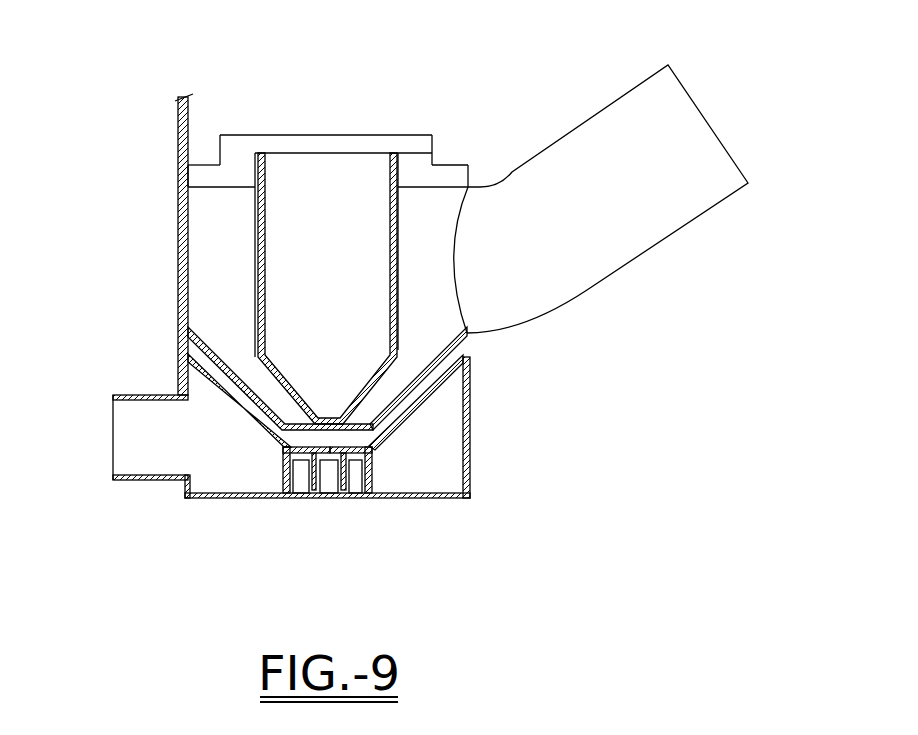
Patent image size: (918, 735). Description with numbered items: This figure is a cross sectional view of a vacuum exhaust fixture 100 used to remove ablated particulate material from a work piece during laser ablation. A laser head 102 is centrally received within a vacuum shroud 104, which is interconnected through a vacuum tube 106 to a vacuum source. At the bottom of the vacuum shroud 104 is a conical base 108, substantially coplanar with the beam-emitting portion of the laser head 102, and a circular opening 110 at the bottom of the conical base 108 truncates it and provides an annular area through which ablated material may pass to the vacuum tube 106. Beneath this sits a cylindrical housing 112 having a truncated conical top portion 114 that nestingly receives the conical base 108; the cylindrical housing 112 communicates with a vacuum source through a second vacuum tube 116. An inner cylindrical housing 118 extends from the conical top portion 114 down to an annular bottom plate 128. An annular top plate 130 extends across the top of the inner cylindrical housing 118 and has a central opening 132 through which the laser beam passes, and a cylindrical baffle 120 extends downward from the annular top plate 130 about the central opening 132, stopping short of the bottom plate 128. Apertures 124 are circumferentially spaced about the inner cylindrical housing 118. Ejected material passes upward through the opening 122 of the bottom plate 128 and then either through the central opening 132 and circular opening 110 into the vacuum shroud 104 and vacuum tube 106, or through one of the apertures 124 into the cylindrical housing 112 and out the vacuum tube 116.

The vacuum exhaust fixture 100 is at (290, 112).
The laser head 102 is at (350, 288).
The vacuum shroud 104 is at (441, 172).
The vacuum tube 106 is at (568, 133).
The conical base 108 is at (470, 335).
The circular opening 110 is at (283, 413).
The cylindrical housing 112 is at (482, 450).
The truncated conical top portion 114 is at (418, 403).
The vacuum tube 116 is at (148, 480).
The inner cylindrical housing 118 is at (376, 482).
The cylindrical baffle 120 is at (307, 473).
The opening 122 is at (340, 508).
The apertures 124 is at (321, 483).
The bottom plate 128 is at (204, 500).
The annular top plate 130 is at (283, 442).
The central opening 132 is at (330, 437).